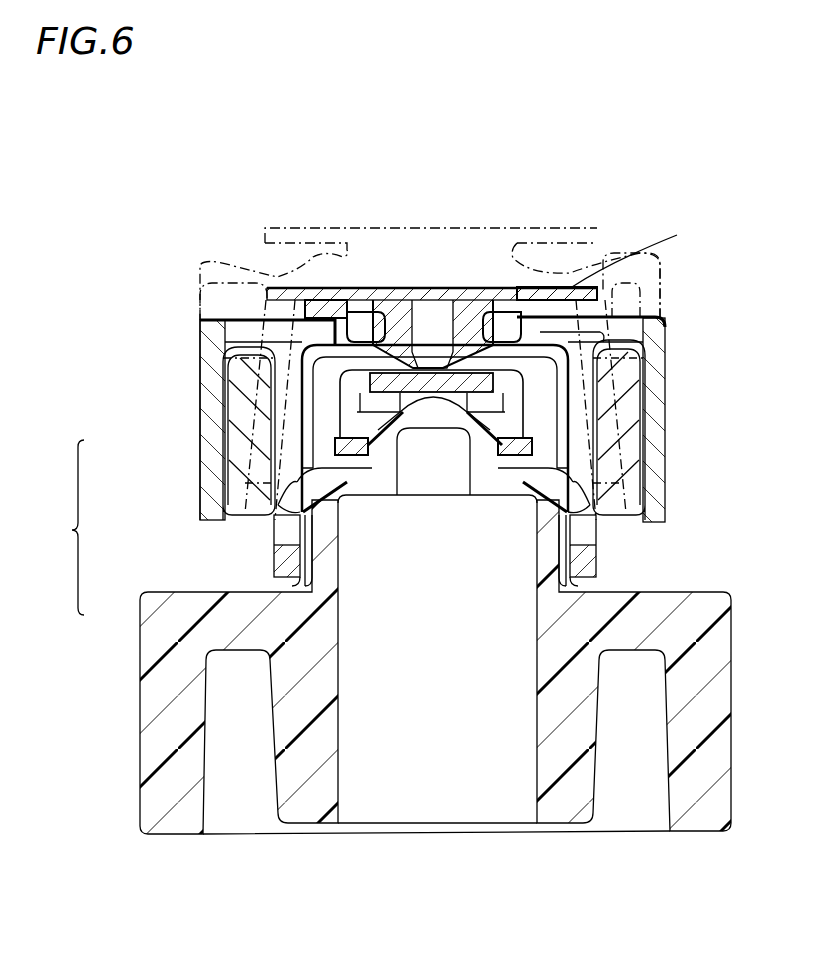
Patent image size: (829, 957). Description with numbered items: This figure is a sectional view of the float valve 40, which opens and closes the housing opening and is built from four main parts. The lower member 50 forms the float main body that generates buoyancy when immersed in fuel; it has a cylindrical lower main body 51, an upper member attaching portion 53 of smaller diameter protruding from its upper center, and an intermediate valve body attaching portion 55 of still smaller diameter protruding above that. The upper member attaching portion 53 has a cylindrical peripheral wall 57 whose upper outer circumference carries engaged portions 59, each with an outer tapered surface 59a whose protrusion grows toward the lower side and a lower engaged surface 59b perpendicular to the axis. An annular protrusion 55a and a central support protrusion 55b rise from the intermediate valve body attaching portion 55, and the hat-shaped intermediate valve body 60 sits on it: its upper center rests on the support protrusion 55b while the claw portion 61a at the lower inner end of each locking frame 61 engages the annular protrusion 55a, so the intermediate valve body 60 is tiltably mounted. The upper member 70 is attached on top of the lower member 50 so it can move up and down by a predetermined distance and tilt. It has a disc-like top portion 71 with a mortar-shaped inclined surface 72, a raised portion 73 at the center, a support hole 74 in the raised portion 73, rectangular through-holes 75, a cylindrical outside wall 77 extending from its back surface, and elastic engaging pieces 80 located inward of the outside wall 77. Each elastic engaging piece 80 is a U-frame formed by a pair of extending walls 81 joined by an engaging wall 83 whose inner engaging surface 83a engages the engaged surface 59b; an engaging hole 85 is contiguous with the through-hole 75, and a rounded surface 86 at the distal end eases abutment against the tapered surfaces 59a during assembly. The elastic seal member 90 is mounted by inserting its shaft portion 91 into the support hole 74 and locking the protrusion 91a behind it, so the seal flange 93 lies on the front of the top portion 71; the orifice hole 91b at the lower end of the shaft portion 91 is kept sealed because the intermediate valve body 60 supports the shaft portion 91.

The float valve 40 is at (63, 527).
The lower member 50 is at (440, 664).
The lower main body 51 is at (707, 708).
The upper member attaching portion 53 is at (574, 534).
The intermediate valve body attaching portion 55 is at (500, 406).
The annular protrusion 55a is at (472, 445).
The support protrusion 55b is at (435, 402).
The cylindrical peripheral wall 57 is at (535, 580).
The engaged portion 59 is at (300, 510).
The tapered surface 59a is at (596, 482).
The engaged surface 59b is at (597, 513).
The intermediate valve body 60 is at (300, 520).
The locking frame 61 is at (300, 390).
The claw portion 61a is at (395, 480).
The upper member 70 is at (188, 457).
The top portion 71 is at (607, 315).
The inclined surface 72 is at (622, 320).
The raised portion 73 is at (348, 320).
The support hole 74 is at (476, 300).
The through-hole 75 is at (335, 320).
The outside wall 77 is at (213, 395).
The elastic engaging piece 80 is at (245, 348).
The extending wall 81 is at (302, 427).
The engaging wall 83 is at (285, 570).
The engaging surface 83a is at (599, 543).
The engaging hole 85 is at (335, 447).
The rounded surface 86 is at (307, 568).
The seal member 90 is at (466, 278).
The shaft portion 91 is at (392, 312).
The protrusion 91a is at (500, 330).
The orifice hole 91b is at (426, 325).
The seal flange 93 is at (568, 300).